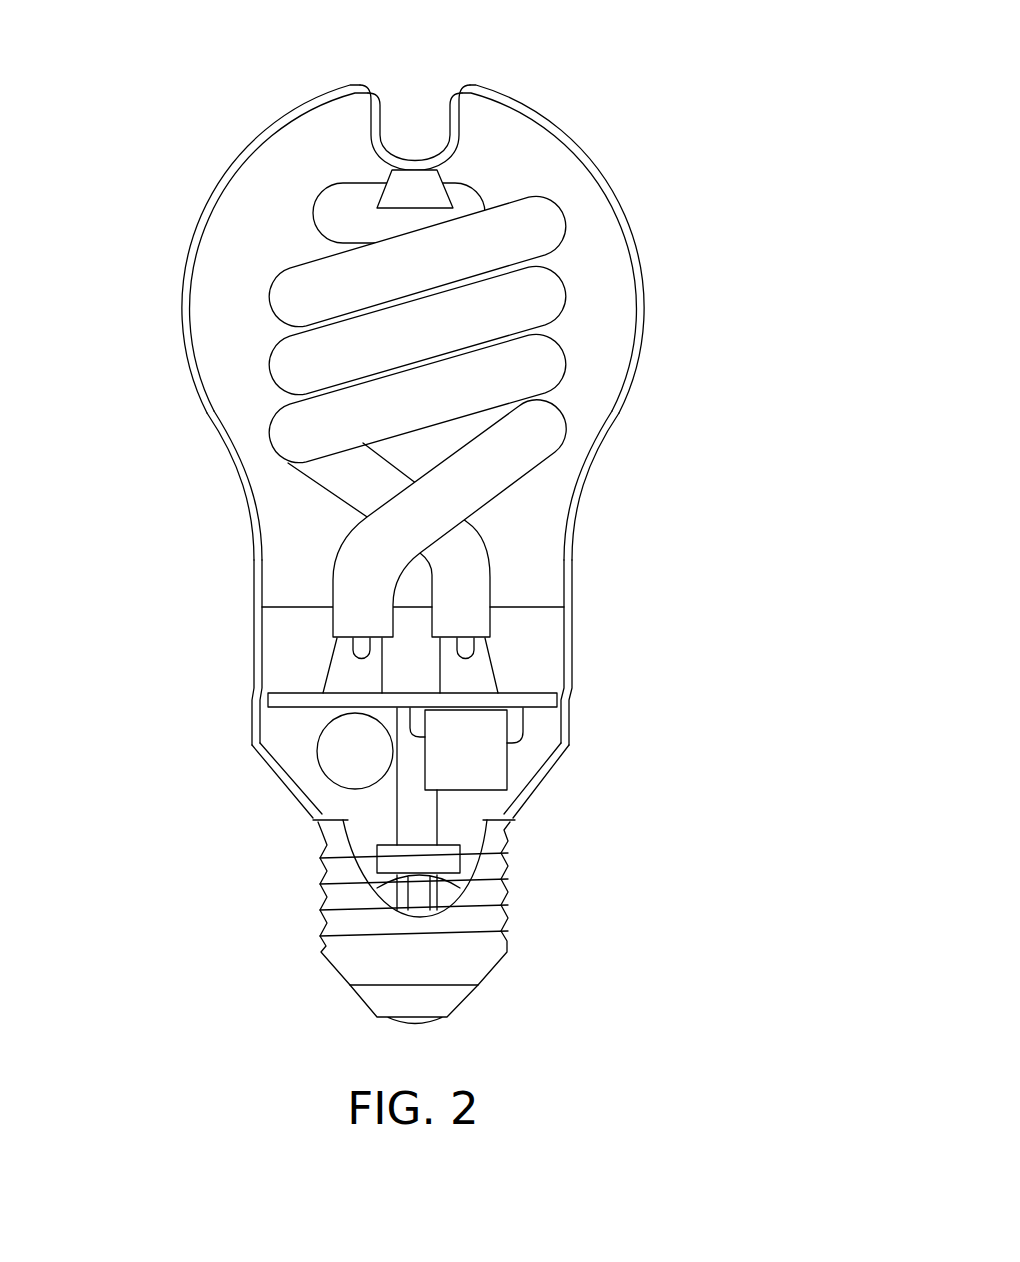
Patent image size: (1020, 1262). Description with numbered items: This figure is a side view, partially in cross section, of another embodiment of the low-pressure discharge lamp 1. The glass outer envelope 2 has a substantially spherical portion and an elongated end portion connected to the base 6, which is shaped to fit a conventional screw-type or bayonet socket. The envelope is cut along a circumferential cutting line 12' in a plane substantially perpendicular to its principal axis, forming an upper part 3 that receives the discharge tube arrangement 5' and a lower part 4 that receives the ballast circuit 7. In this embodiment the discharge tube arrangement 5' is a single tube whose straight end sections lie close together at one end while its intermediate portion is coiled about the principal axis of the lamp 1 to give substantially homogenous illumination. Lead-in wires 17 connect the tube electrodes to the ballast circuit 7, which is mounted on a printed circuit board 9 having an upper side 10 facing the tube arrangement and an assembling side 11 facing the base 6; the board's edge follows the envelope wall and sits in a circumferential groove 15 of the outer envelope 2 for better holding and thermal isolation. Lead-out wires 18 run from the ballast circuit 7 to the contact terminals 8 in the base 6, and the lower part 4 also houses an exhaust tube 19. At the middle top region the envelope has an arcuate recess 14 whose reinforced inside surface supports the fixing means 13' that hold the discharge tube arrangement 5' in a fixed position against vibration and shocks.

The low-pressure discharge lamp 1 is at (429, 519).
The outer envelope 2 is at (632, 210).
The upper part 3 is at (205, 418).
The lower part 4 is at (270, 772).
The discharge tube arrangement 5' is at (343, 384).
The base 6 is at (318, 943).
The ballast circuit 7 is at (433, 770).
The contact terminals 8 is at (425, 1022).
The printed circuit board 9 is at (552, 702).
The upper side 10 is at (510, 690).
The assembling side 11 is at (527, 708).
The cutting line 12' is at (483, 572).
The fixing means 13' is at (541, 135).
The arcuate recess 14 is at (390, 122).
The circumferential groove 15 is at (255, 705).
The lead-in wires 17 is at (330, 667).
The lead-out wires 18 is at (437, 824).
The exhaust tube 19 is at (415, 893).